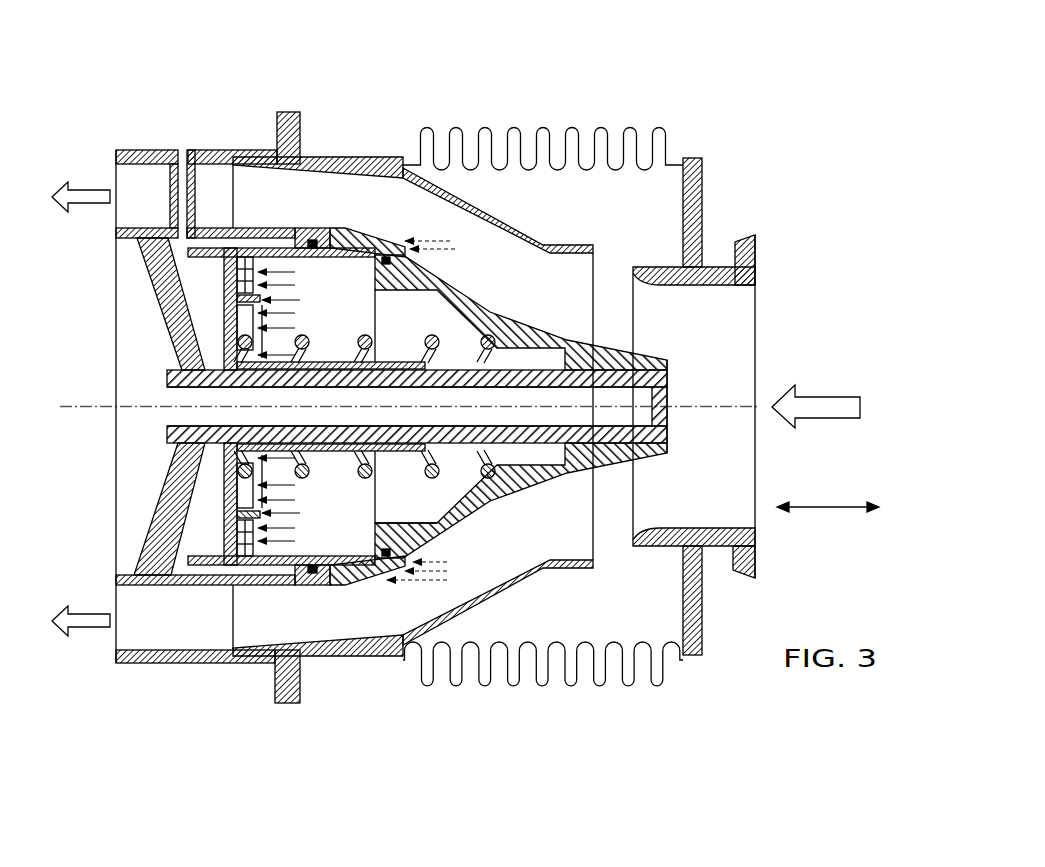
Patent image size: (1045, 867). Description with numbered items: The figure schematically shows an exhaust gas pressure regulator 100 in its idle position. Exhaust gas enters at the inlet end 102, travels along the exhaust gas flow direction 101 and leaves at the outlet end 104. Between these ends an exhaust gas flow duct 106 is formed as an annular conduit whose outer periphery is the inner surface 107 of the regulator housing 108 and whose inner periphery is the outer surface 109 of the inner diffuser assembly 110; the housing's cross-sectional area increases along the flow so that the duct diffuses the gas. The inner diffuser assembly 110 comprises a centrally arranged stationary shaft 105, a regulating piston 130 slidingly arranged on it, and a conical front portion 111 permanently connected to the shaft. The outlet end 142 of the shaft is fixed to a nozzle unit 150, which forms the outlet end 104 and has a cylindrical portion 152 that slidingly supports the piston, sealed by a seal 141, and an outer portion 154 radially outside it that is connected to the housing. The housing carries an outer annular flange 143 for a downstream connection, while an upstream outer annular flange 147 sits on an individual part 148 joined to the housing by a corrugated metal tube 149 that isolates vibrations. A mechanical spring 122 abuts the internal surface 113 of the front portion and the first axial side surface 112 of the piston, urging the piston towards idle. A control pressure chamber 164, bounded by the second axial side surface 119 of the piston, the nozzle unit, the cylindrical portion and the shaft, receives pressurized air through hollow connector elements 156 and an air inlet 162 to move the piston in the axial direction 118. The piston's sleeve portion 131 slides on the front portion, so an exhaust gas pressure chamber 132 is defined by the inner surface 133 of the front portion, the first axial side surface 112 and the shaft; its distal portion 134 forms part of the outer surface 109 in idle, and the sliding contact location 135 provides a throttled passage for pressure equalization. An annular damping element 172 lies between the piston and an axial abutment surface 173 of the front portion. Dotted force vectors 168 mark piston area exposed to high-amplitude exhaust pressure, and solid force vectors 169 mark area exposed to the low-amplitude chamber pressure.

The exhaust gas pressure regulator 100 is at (805, 88).
The exhaust gas flow direction 101 is at (80, 625).
The inlet end 102 is at (737, 370).
The outlet end 104 is at (123, 213).
The shaft 105 is at (163, 377).
The exhaust gas flow duct 106 is at (488, 255).
The inner surface 107 is at (440, 650).
The regulator housing 108 is at (350, 600).
The outer surface 109 is at (477, 290).
The inner diffuser assembly 110 is at (545, 295).
The conical front portion 111 is at (600, 470).
The first axial side surface 112 is at (255, 585).
The internal surface 113 is at (573, 470).
The axial direction 118 is at (843, 507).
The second axial side surface 119 is at (197, 585).
The mechanical spring 122 is at (222, 472).
The regulating piston 130 is at (222, 500).
The sleeve portion 131 is at (375, 560).
The exhaust gas pressure chamber 132 is at (373, 245).
The inner surface 133 is at (480, 600).
The distal portion 134 is at (410, 235).
The location of sliding contact 135 is at (407, 655).
The seal 141 is at (333, 228).
The outlet end of the shaft 142 is at (167, 426).
The outer annular flange 143 is at (290, 142).
The outer annular flange 147 is at (748, 580).
The individual part 148 is at (710, 270).
The corrugated metal tube 149 is at (663, 650).
The nozzle unit 150 is at (163, 288).
The cylindrical portion 152 is at (222, 240).
The outer portion 154 is at (163, 655).
The hollow connector element 156 is at (170, 217).
The air inlet 162 is at (183, 146).
The control pressure chamber 164 is at (128, 208).
The dotted force vectors 168 is at (415, 232).
The solid force vectors 169 is at (236, 165).
The annular damping element 172 is at (237, 573).
The axial abutment surface 173 is at (330, 302).